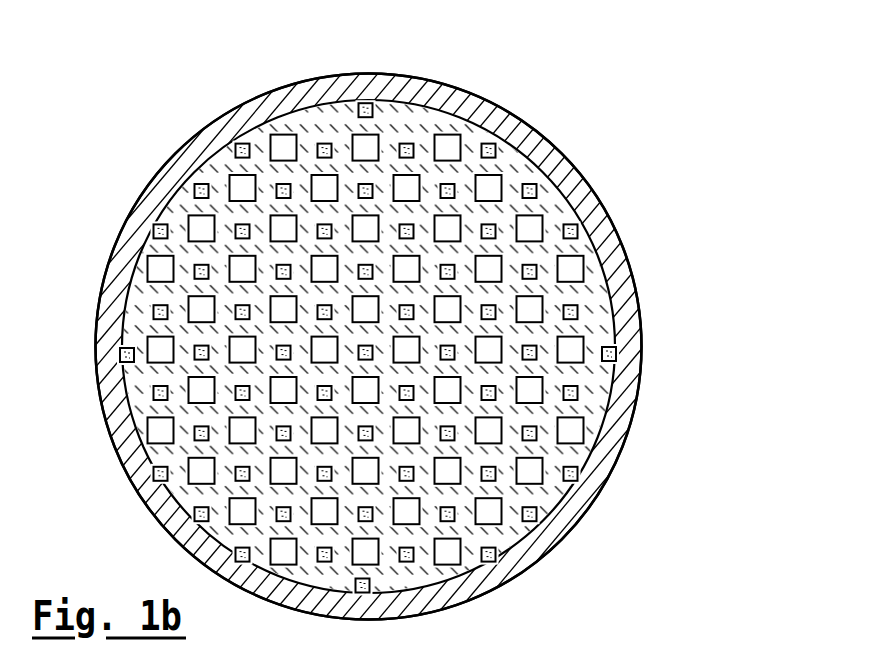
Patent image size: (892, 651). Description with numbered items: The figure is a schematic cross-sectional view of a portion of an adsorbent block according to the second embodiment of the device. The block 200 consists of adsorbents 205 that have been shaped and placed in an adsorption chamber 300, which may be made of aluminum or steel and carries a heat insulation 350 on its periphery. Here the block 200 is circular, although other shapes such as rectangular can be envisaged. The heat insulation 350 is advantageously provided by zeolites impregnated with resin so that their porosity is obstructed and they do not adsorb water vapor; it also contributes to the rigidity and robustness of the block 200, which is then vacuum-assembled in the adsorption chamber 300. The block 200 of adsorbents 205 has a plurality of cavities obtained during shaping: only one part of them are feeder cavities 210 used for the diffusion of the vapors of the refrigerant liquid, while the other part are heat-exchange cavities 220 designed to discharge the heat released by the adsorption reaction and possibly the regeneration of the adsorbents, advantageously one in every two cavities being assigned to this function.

The block 200 is at (389, 315).
The adsorbents 205 is at (598, 303).
The feeder cavities 210 is at (453, 552).
The heat-exchange cavities 220 is at (577, 385).
The adsorption chamber 300 is at (174, 161).
The heat insulation 350 is at (135, 475).